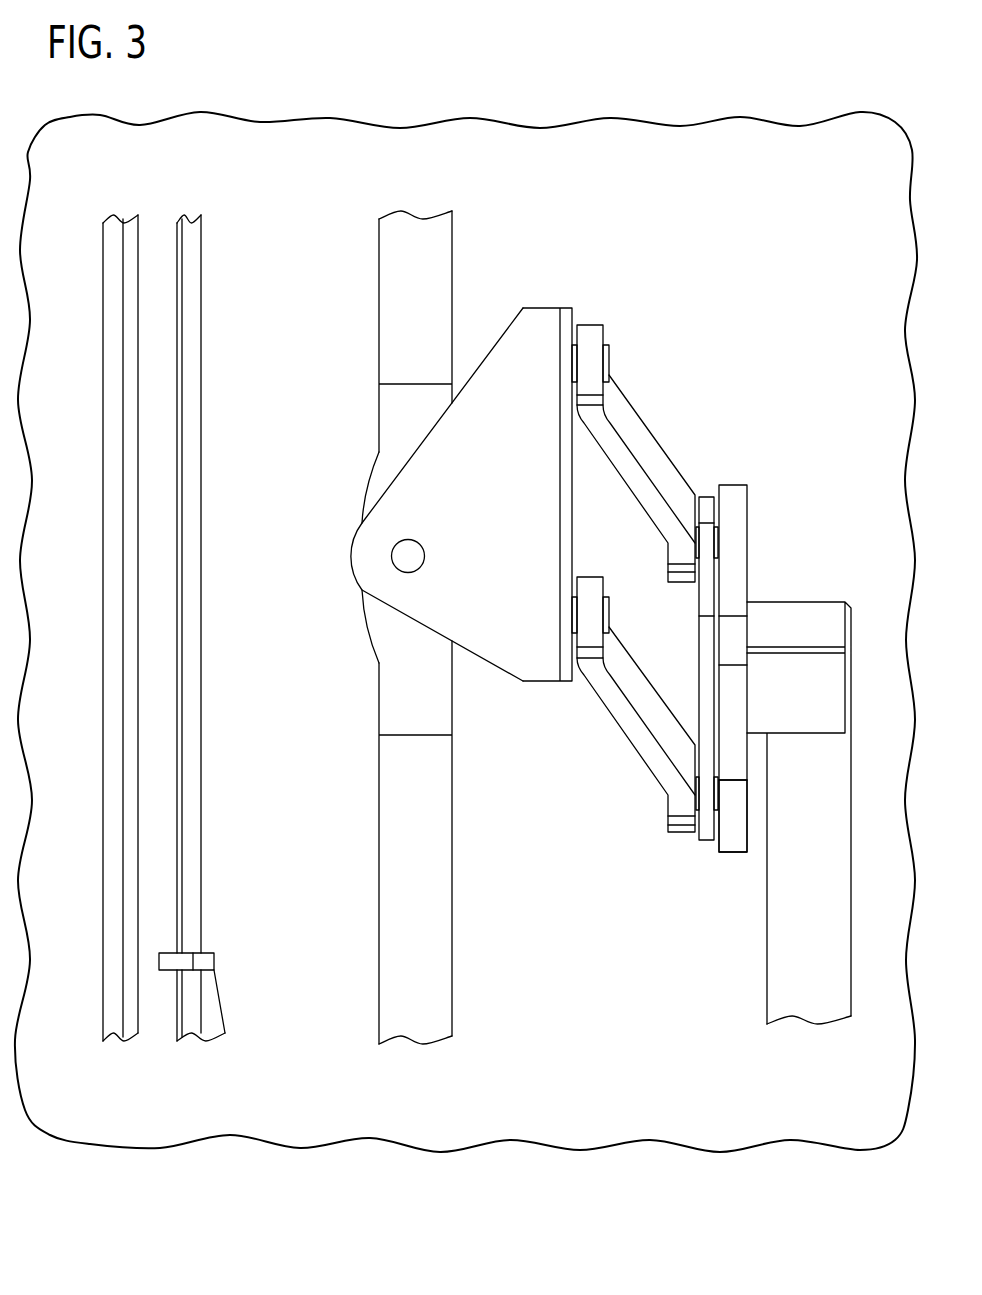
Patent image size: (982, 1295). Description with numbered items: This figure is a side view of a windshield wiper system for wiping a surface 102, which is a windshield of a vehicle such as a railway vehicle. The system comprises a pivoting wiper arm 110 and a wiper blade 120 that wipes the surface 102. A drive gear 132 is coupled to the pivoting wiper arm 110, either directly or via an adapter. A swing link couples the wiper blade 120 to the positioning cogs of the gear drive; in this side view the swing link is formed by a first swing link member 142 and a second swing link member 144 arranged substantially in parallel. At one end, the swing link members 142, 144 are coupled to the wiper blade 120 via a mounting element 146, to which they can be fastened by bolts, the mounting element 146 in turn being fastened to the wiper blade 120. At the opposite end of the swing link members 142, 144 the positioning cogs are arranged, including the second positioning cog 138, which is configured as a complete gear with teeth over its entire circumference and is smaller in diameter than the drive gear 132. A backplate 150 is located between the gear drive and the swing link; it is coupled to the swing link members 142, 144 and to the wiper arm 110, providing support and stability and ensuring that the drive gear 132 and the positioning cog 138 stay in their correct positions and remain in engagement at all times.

The surface 102 is at (757, 247).
The pivoting wiper arm 110 is at (790, 933).
The wiper blade 120 is at (192, 505).
The drive gear 132 is at (733, 547).
The second positioning cog 138 is at (733, 840).
The first swing link member 142 is at (636, 438).
The second swing link member 144 is at (648, 703).
The mounting element 146 is at (541, 323).
The backplate 150 is at (708, 505).